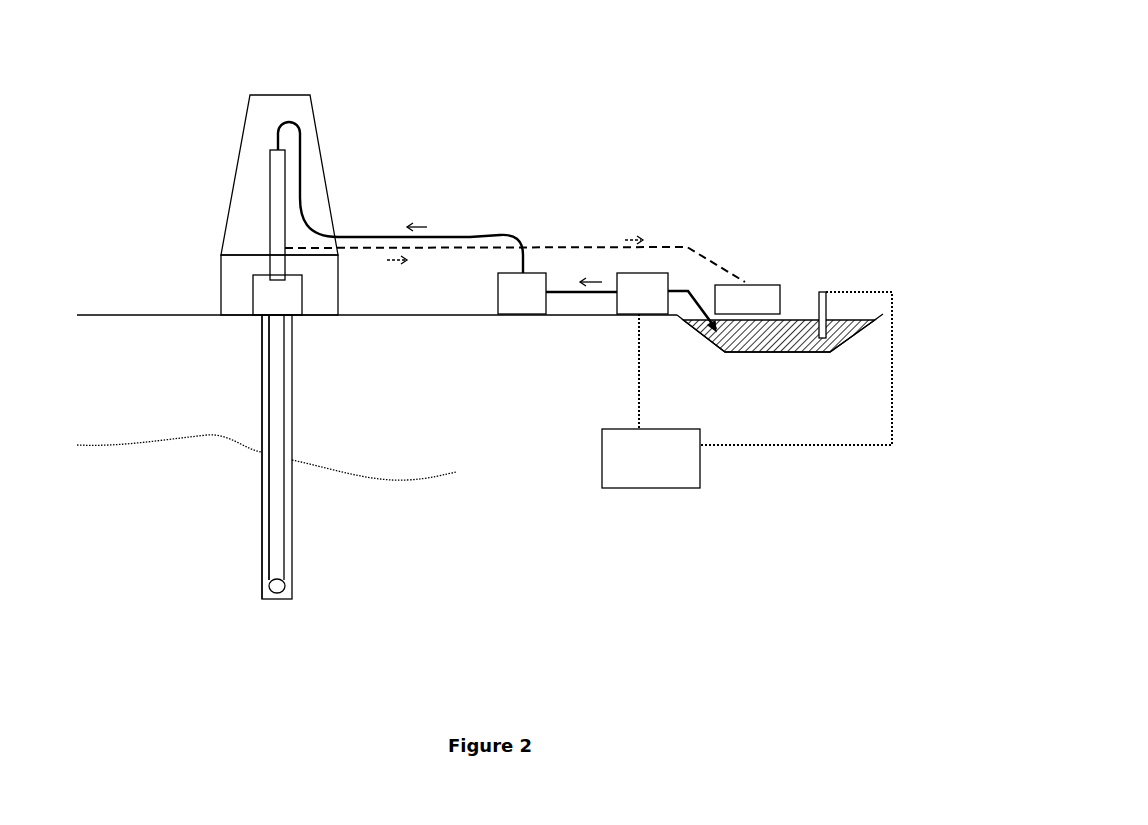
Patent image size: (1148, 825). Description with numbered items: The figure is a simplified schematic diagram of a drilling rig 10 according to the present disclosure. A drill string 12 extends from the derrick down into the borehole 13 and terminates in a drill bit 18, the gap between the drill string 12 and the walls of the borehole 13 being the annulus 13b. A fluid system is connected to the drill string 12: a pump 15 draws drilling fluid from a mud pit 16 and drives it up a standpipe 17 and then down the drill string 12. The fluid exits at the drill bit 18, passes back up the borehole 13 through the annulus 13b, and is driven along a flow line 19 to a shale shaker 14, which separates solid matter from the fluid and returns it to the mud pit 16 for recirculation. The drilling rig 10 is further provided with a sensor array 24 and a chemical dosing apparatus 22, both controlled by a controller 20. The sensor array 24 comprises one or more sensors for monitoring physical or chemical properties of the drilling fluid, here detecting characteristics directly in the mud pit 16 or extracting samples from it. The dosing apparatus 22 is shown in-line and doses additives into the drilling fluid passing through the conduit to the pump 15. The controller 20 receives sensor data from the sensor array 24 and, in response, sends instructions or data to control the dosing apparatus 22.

The drilling rig 10 is at (717, 78).
The drill string 12 is at (280, 437).
The borehole 13 is at (293, 550).
The annulus 13b is at (265, 527).
The shale shaker 14 is at (763, 287).
The pump 15 is at (515, 300).
The mud pit 16 is at (797, 320).
The standpipe 17 is at (300, 162).
The drill bit 18 is at (277, 593).
The flow line 19 is at (563, 243).
The controller 20 is at (657, 488).
The chemical dosing apparatus 22 is at (626, 312).
The sensor array 24 is at (822, 292).